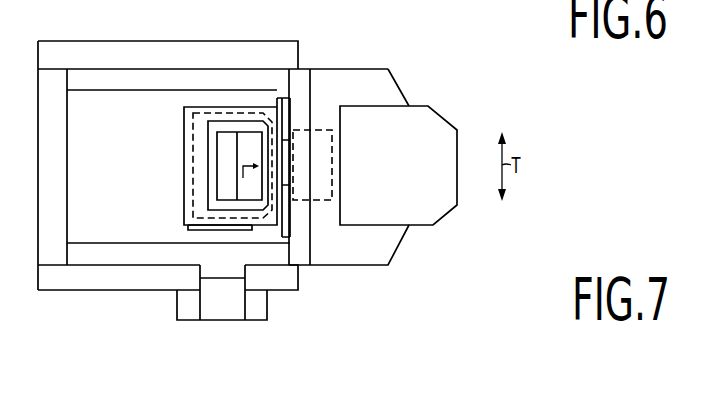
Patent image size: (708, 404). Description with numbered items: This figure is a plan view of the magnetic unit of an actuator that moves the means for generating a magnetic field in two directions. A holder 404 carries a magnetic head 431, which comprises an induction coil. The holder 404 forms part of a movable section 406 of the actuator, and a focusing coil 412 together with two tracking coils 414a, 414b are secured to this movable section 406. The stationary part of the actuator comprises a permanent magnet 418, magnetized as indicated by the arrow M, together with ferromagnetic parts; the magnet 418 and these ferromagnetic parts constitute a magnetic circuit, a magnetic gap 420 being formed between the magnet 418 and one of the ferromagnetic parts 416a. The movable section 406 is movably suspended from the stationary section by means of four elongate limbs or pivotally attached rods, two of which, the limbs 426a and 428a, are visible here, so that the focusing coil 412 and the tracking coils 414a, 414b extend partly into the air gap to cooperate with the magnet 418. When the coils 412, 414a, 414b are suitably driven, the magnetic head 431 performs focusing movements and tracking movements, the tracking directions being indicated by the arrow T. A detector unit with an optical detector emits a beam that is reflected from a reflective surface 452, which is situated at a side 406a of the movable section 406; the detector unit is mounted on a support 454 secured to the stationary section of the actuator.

The holder 404 is at (360, 76).
The movable section 406 is at (298, 85).
The side of the movable section 406a is at (263, 229).
The focusing coil 412 is at (197, 113).
The tracking coil 414a is at (264, 113).
The tracking coil 414b is at (285, 212).
The ferromagnetic part 416a is at (326, 130).
The permanent magnet 418 is at (245, 143).
The magnetic gap 420 is at (285, 170).
The elongate limb 426a is at (98, 253).
The elongate limb 428a is at (95, 82).
The magnetic head 431 is at (432, 127).
The reflective surface 452 is at (193, 232).
The support 454 is at (255, 310).